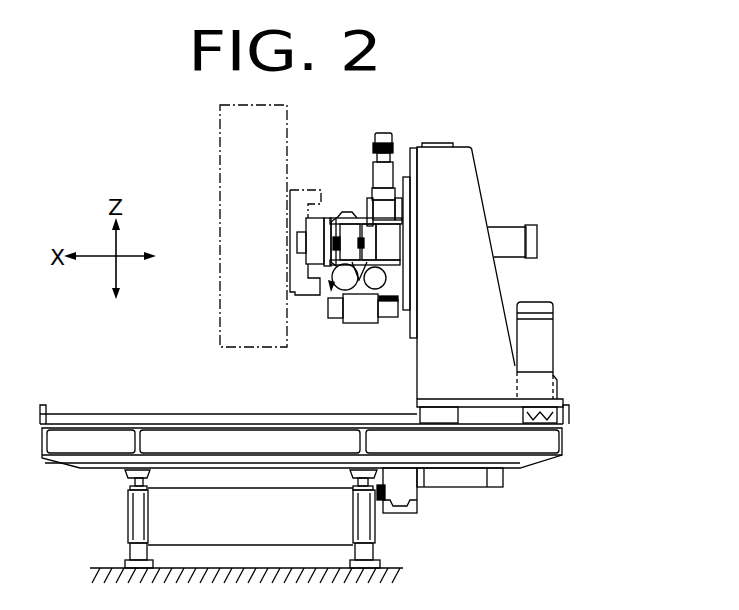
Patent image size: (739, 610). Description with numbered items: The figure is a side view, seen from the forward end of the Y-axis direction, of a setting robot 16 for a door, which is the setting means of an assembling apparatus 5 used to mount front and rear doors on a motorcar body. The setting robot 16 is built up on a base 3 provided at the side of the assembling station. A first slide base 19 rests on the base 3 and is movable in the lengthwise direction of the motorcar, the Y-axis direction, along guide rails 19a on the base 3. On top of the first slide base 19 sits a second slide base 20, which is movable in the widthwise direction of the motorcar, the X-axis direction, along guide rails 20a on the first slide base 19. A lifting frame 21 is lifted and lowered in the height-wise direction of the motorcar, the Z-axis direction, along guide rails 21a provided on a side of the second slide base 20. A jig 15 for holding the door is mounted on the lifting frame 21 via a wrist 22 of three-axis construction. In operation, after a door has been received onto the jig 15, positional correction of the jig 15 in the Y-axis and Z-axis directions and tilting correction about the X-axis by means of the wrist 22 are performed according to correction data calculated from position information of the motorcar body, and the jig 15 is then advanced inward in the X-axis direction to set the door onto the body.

The base 3 is at (340, 532).
The assembling apparatus 5 is at (512, 288).
The jig 15 is at (232, 305).
The setting robot 16 is at (474, 144).
The first slide base 19 is at (232, 443).
The guide rails 19a is at (148, 484).
The second slide base 20 is at (423, 374).
The guide rails 20a is at (160, 420).
The lifting frame 21 is at (408, 238).
The guide rails 21a is at (415, 188).
The wrist 22 is at (345, 203).